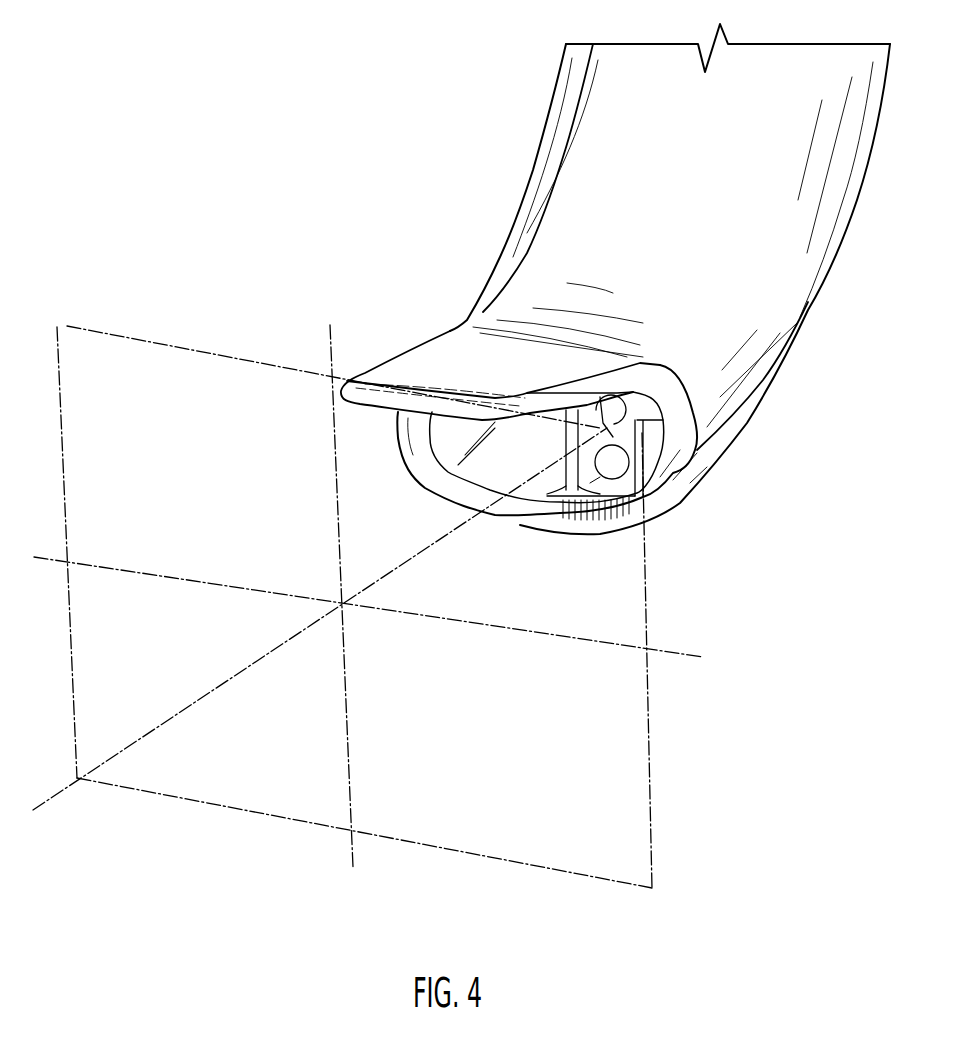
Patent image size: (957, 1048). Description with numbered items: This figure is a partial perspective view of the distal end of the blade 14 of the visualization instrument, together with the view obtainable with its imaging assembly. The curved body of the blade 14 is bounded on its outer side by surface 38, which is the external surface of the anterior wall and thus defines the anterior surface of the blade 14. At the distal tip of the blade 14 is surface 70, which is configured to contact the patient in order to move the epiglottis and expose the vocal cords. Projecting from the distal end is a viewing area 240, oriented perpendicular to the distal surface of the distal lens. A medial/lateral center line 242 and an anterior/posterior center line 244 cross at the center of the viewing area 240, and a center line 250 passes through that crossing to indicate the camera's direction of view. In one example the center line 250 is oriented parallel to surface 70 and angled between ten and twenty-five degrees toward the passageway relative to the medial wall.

The blade 14 is at (516, 171).
The surface 38 is at (670, 200).
The surface 70 is at (463, 353).
The viewing area 240 is at (622, 608).
The medial/lateral center line 242 is at (353, 857).
The anterior/posterior center line 244 is at (602, 642).
The center line 250 is at (200, 700).